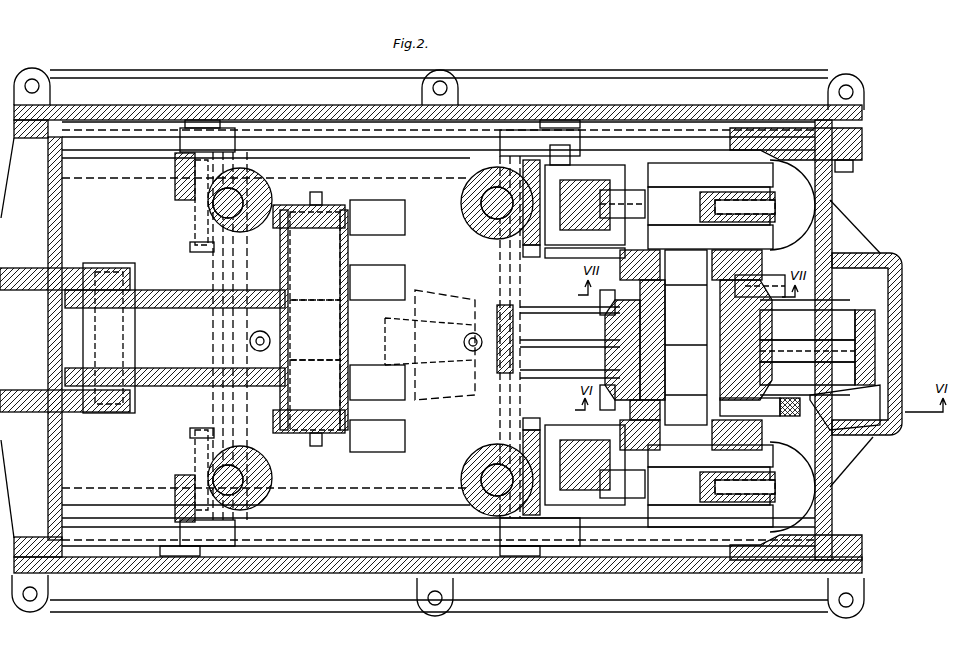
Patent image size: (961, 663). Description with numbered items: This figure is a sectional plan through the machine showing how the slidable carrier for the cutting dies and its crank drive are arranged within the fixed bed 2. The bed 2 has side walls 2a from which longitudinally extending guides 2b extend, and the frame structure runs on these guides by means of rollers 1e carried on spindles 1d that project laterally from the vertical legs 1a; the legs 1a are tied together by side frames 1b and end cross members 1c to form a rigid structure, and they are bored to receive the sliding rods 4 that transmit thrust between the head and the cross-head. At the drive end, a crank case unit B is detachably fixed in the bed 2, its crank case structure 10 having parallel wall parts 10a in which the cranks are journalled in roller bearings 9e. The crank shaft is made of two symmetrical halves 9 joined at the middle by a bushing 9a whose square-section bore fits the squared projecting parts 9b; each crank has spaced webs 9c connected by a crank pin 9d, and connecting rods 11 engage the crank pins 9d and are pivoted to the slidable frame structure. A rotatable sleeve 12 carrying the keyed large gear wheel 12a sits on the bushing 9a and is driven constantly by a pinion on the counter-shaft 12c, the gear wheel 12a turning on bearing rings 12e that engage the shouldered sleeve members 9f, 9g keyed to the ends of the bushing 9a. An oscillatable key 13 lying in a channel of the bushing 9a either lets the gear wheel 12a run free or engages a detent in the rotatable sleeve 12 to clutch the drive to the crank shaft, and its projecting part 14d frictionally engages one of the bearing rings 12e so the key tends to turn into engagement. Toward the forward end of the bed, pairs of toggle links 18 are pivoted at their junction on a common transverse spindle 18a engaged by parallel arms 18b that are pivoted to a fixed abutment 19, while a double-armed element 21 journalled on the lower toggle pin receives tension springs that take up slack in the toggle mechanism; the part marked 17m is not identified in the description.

The fixed bed 2 is at (332, 72).
The side wall 2a is at (270, 110).
The longitudinally extending guide 2b is at (112, 150).
The crank case unit B is at (843, 200).
The crank case structure 10 is at (903, 280).
The wall part 10a is at (778, 145).
The vertical leg 1a is at (208, 225).
The side frame 1b is at (332, 175).
The end cross member 1c is at (214, 328).
The spindle 1d is at (200, 208).
The roller 1e is at (178, 146).
The rod 4 is at (206, 250).
The toggle link 18 is at (326, 206).
The common transverse spindle 18a is at (315, 321).
The parallel arm 18b is at (160, 366).
The fixed abutment 19 is at (66, 282).
The double-armed element 21 is at (272, 335).
The lever 17m is at (602, 188).
The connecting rod 11 is at (630, 212).
The crank shaft half 9 is at (691, 350).
The bushing 9a is at (622, 356).
The squared projecting part 9b is at (684, 349).
The web 9c is at (678, 178).
The crank pin 9d is at (718, 200).
The roller bearing 9e is at (642, 245).
The sleeve member 9f is at (755, 305).
The sleeve member 9g is at (640, 402).
The rotatable sleeve 12 is at (762, 335).
The large gear wheel 12a is at (870, 328).
The counter-shaft 12c is at (610, 380).
The bearing ring 12e is at (618, 322).
The oscillatable key 13 is at (762, 363).
The projecting part 14d is at (790, 390).